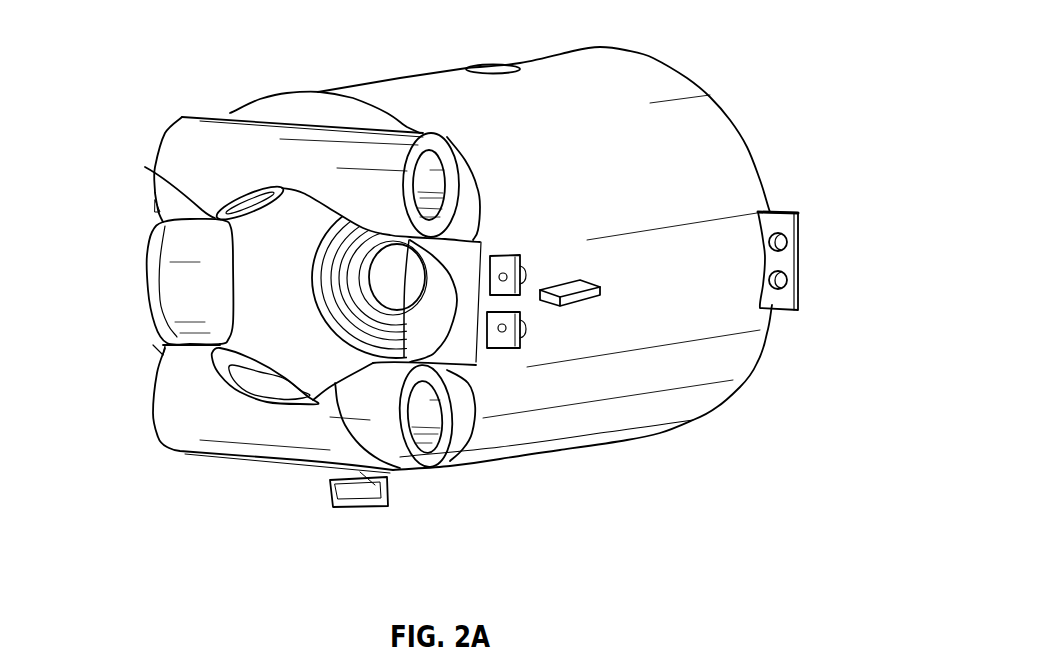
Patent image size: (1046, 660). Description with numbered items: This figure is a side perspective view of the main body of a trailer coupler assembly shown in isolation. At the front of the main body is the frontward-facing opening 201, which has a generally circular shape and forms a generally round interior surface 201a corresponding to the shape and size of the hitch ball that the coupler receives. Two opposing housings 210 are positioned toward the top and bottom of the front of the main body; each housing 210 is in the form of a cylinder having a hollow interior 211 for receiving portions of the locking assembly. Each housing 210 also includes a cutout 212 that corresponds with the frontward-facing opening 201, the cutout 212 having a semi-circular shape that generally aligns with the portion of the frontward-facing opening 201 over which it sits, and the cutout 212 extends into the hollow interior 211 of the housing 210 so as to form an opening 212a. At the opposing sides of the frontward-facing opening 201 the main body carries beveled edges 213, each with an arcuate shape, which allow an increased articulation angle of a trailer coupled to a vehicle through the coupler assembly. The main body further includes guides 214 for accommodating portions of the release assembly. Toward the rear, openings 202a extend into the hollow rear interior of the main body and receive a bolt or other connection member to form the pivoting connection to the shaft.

The frontward-facing opening 201 is at (145, 167).
The round interior surface 201a is at (373, 270).
The opening 202a is at (493, 68).
The housing 210 is at (187, 118).
The hollow interior 211 is at (443, 182).
The cutout 212 is at (313, 190).
The opening 212a is at (254, 187).
The beveled edge 213 is at (202, 263).
The guide 214 is at (513, 283).